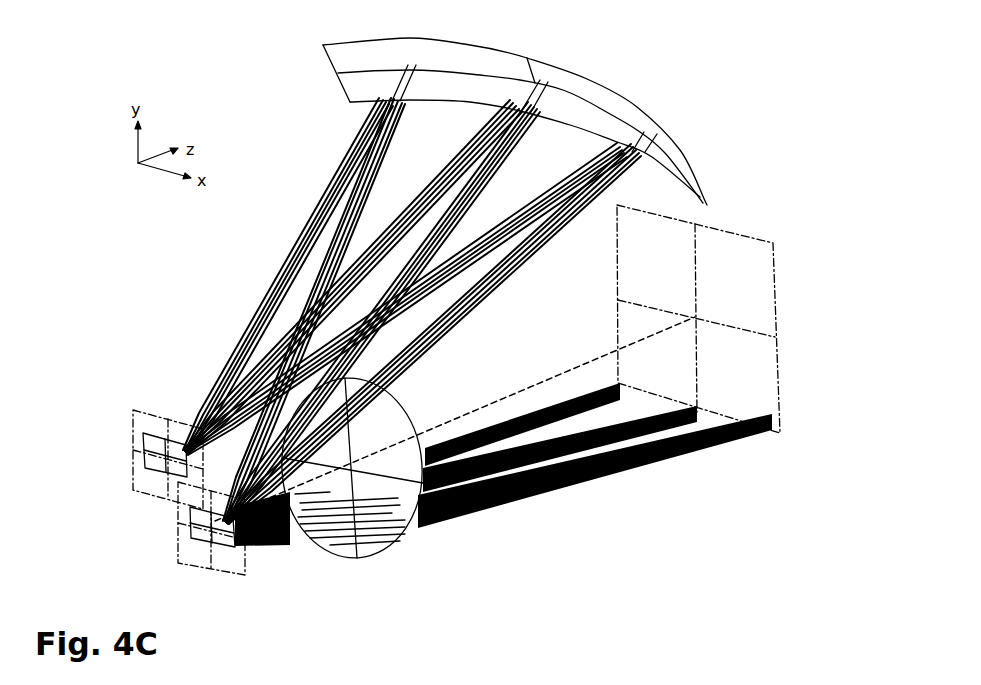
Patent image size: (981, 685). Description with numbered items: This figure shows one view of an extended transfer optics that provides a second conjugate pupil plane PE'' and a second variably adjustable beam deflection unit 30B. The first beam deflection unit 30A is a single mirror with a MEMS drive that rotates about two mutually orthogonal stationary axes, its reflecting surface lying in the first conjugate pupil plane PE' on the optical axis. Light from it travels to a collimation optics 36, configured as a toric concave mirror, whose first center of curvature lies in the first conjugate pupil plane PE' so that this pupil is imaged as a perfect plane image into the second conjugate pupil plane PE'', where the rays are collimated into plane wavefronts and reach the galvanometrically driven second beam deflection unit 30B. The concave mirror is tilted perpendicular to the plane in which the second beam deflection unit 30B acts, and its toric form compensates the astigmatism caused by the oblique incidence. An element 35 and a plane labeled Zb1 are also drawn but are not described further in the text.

The collimation optics 36 is at (593, 81).
The lens 35 is at (340, 558).
The first beam deflection unit 30A is at (189, 531).
The second beam deflection unit 30B is at (157, 477).
The first conjugate pupil plane PE' is at (190, 546).
The second conjugate pupil plane PE'' is at (137, 458).
The irradiation region Zb1 is at (733, 233).